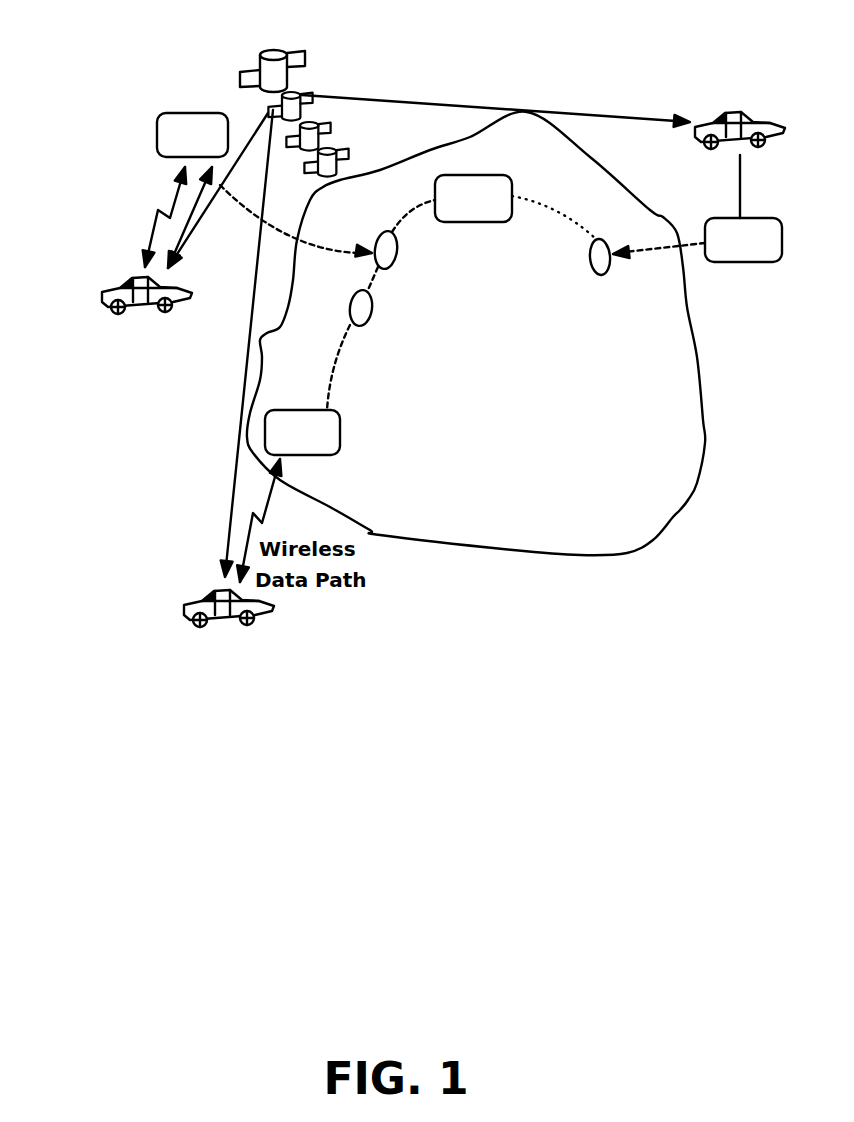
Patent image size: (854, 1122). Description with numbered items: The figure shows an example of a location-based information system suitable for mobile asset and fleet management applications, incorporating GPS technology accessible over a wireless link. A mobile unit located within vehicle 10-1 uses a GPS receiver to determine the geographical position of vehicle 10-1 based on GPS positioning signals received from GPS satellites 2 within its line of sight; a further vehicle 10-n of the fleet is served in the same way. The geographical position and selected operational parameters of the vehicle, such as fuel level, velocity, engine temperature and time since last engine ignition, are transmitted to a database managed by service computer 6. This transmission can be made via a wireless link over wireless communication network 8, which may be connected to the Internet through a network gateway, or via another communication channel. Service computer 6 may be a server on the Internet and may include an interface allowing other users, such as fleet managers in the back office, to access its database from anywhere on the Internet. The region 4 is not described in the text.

The GPS satellites 2 is at (233, 55).
The geographic region 4 is at (491, 552).
The service computer 6 is at (466, 211).
The wireless communication network 8 is at (185, 148).
The vehicle 10-1 is at (126, 289).
The vehicle 10-n is at (720, 121).